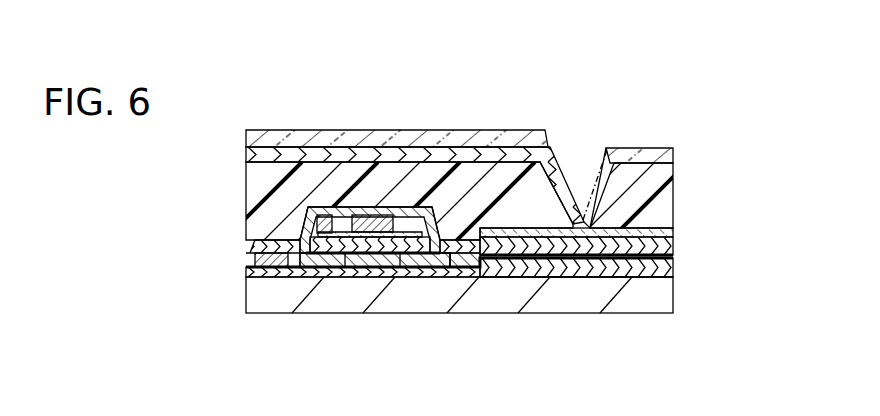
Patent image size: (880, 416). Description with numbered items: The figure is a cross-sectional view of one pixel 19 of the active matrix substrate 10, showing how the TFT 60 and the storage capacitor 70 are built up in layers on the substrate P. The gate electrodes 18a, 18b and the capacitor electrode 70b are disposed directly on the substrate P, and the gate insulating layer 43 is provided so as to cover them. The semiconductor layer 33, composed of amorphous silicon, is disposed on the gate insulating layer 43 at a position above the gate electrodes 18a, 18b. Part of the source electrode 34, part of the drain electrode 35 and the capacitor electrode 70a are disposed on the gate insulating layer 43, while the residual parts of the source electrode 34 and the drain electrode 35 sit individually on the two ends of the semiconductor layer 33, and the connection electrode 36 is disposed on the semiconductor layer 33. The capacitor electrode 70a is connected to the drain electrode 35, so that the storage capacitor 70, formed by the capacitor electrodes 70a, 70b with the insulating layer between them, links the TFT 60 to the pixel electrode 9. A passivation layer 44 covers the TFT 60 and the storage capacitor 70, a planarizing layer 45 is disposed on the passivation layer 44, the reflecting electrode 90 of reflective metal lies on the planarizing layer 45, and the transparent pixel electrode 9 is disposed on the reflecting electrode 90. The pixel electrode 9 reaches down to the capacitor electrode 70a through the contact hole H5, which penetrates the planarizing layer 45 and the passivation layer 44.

The active matrix substrate 10 is at (688, 88).
The pixel 19 is at (590, 120).
The contact hole H5 is at (560, 165).
The pixel electrode 9 is at (246, 133).
The reflecting electrode 90 is at (246, 155).
The planarizing layer 45 is at (246, 192).
The passivation layer 44 is at (673, 235).
The gate insulating layer 43 is at (673, 258).
The substrate P is at (673, 295).
The connection electrode 36 is at (374, 220).
The source electrode 34 is at (272, 255).
The semiconductor layer 33 is at (370, 262).
The gate electrode 18a is at (342, 265).
The gate electrode 18b is at (403, 265).
The drain electrode 35 is at (452, 262).
The TFT 60 is at (312, 322).
The storage capacitor 70 is at (515, 282).
The capacitor electrode 70a is at (552, 277).
The capacitor electrode 70b is at (627, 277).